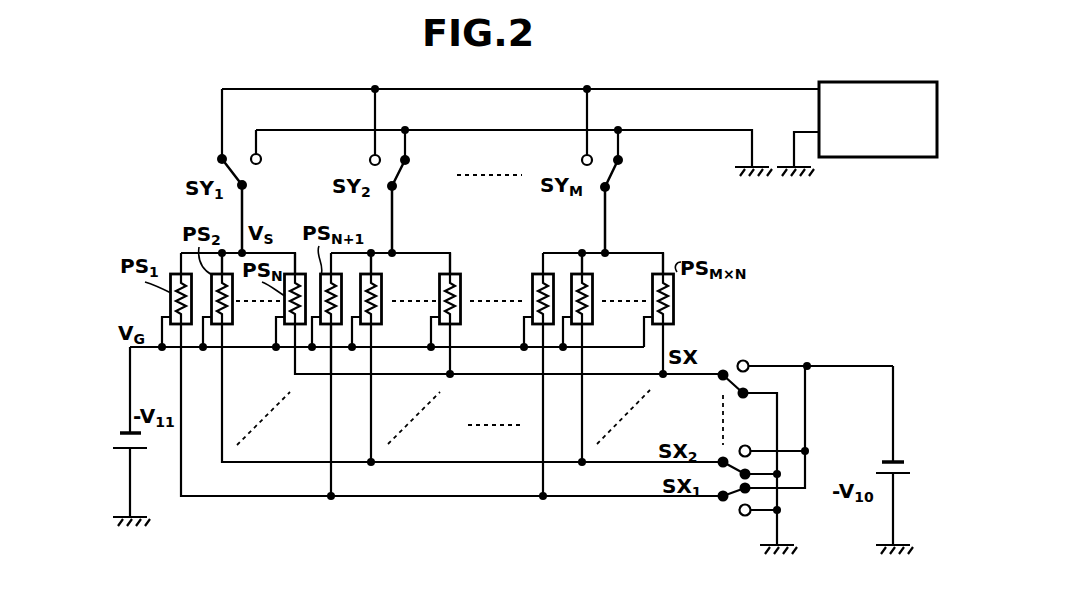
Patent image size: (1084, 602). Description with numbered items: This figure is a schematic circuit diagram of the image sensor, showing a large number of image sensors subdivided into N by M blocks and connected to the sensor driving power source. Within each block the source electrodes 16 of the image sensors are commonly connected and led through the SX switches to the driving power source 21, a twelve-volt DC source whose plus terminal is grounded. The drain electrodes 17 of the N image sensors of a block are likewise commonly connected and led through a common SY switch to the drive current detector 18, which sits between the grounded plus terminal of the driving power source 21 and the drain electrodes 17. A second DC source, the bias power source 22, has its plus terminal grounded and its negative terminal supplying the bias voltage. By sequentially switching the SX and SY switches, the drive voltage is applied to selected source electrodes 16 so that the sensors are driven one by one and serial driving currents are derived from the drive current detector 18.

The source electrode 16 is at (182, 335).
The drain electrode 17 is at (180, 262).
The drive current detector 18 is at (868, 81).
The driving power source 21 is at (905, 460).
The bias power source 22 is at (118, 443).